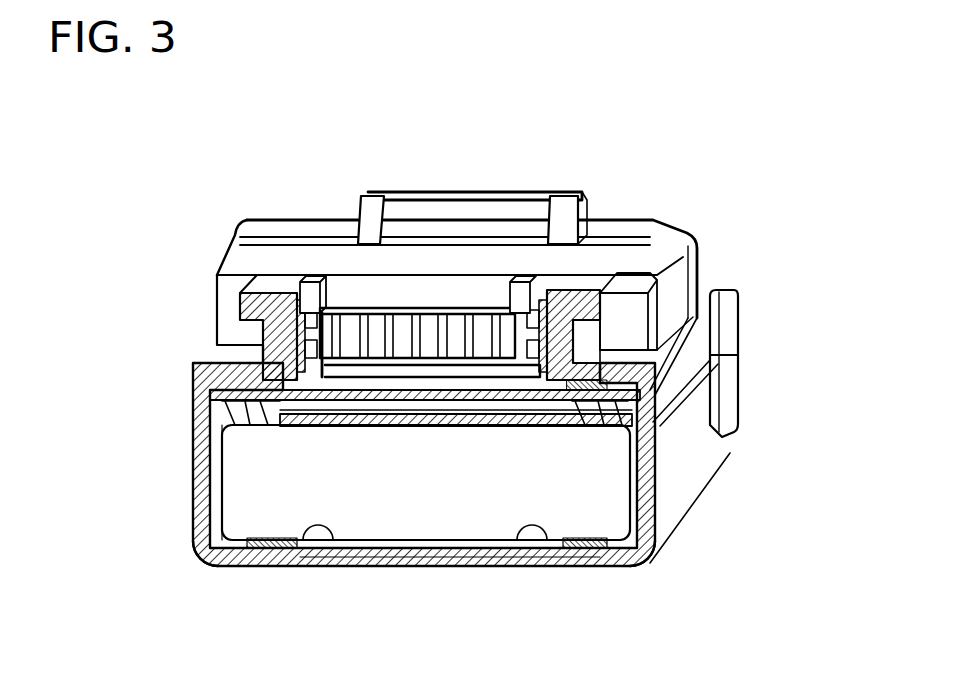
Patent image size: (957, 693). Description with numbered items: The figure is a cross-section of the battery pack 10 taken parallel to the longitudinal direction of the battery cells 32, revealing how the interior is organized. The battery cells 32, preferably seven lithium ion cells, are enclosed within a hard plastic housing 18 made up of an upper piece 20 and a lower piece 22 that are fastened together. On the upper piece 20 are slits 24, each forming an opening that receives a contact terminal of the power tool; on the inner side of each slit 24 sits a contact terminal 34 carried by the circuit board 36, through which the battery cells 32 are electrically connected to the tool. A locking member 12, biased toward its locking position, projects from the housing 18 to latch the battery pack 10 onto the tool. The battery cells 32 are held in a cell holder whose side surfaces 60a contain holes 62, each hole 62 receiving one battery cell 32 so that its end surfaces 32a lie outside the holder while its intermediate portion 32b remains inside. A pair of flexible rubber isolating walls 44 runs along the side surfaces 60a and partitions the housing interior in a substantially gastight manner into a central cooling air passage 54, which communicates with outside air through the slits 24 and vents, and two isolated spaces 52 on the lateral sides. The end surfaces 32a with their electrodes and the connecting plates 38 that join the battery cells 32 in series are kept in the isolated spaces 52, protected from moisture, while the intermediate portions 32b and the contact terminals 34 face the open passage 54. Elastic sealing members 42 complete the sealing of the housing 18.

The battery pack 10 is at (676, 116).
The locking member 12 is at (466, 192).
The housing 18 is at (797, 363).
The upper piece 20 is at (735, 322).
The lower piece 22 is at (737, 380).
The slits 24 is at (388, 322).
The battery cells 32 is at (468, 550).
The end surfaces 32a is at (200, 537).
The intermediate portion 32b is at (375, 562).
The contact terminals 34 is at (265, 358).
The circuit board 36 is at (203, 394).
The connecting plates 38 is at (202, 478).
The sealing members 42 is at (200, 420).
The isolating walls 44 is at (243, 520).
The isolated spaces 52 is at (200, 553).
The cooling air passage 54 is at (413, 556).
The side surface 60a is at (271, 567).
The holes 62 is at (332, 540).